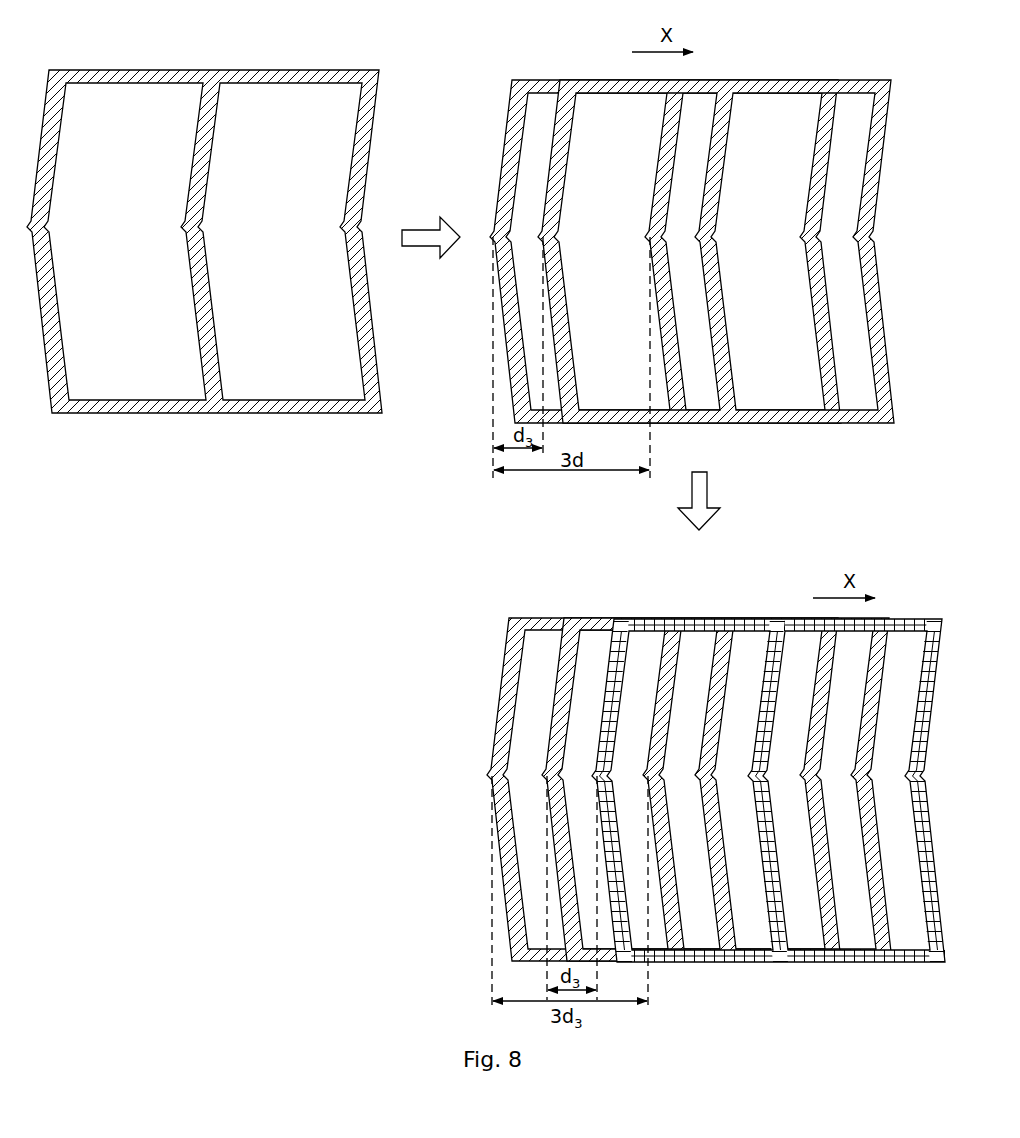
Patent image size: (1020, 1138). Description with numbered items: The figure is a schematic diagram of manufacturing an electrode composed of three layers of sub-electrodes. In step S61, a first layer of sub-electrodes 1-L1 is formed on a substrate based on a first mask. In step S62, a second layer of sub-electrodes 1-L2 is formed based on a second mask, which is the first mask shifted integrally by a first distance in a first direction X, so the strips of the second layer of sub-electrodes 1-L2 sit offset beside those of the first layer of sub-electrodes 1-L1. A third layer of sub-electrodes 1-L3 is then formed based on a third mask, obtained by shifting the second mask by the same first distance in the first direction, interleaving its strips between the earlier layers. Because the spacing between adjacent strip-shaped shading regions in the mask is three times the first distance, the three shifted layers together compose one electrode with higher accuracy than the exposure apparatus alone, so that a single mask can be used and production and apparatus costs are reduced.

The first layer of sub-electrodes 1-L1 is at (434, 481).
The second layer of sub-electrodes 1-L2 is at (716, 486).
The third layer of sub-electrodes 1-L3 is at (768, 755).
The step of forming a first layer of sub-electrodes S61 is at (431, 214).
The step of forming a second layer of sub-electrodes S62 is at (719, 501).